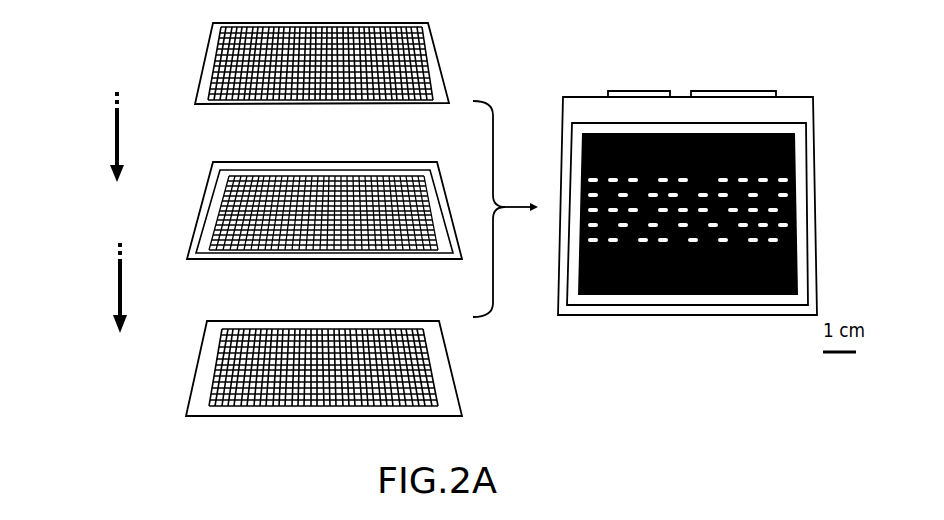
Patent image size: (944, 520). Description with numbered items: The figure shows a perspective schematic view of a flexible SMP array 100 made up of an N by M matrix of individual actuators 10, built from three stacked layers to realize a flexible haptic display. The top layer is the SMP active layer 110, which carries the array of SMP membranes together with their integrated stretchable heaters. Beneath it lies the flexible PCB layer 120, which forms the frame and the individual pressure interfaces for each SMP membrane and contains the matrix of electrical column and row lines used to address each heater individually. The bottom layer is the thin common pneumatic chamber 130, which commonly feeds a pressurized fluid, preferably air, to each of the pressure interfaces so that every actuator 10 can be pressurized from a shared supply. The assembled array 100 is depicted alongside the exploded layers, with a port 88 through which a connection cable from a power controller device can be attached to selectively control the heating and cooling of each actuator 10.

The SMP active layer 110 is at (240, 63).
The flexible PCB layer 120 is at (248, 210).
The thin common pneumatic chamber 130 is at (250, 374).
The flexible SMP array 100 is at (808, 87).
The port 88 is at (735, 85).
The actuator 10 is at (794, 175).